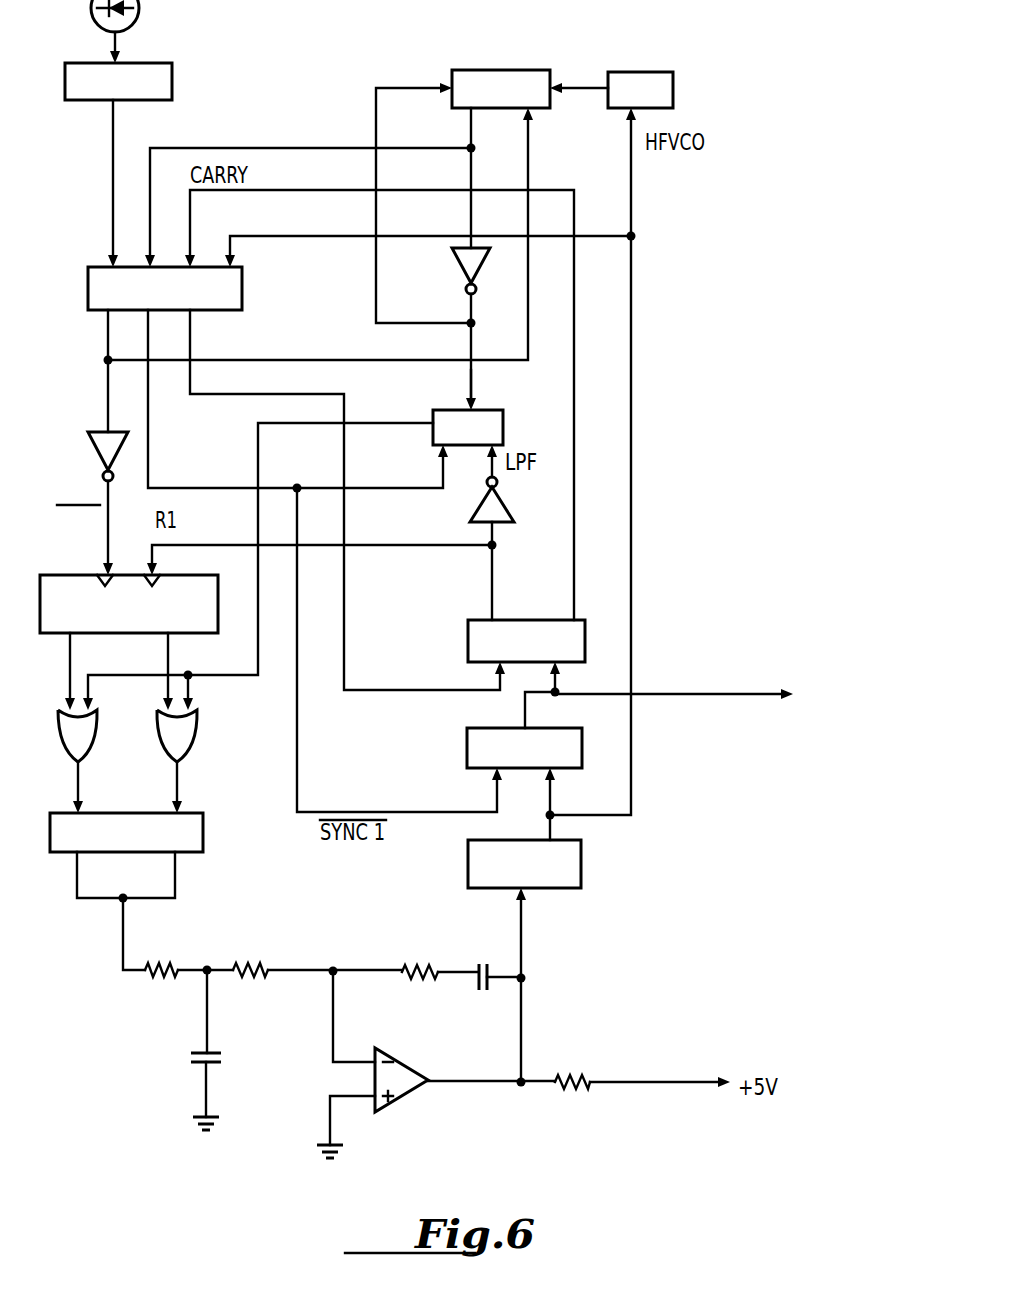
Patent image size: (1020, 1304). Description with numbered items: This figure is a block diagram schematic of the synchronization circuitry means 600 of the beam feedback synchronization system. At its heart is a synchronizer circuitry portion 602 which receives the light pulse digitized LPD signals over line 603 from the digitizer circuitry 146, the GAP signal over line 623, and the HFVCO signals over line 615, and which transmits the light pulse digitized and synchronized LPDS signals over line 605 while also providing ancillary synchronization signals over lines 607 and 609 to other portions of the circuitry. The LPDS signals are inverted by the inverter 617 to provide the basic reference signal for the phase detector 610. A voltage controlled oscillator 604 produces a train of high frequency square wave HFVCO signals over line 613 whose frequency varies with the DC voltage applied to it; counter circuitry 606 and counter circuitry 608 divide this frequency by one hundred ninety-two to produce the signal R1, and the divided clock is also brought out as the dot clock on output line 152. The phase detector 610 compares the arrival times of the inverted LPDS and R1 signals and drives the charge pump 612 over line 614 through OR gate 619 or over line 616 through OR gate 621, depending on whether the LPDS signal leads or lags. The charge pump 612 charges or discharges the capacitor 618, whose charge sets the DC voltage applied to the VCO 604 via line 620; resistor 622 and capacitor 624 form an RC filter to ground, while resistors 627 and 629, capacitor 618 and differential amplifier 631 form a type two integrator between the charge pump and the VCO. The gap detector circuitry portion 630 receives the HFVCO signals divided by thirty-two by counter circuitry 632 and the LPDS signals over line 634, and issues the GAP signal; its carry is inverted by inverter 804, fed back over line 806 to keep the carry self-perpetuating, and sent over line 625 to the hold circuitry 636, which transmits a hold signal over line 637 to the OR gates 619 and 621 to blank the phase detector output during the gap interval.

The digitizer circuitry 146 is at (173, 72).
The line 603 is at (111, 138).
The line 623 is at (356, 147).
The gap detector circuitry portion 630 is at (512, 62).
The counter circuitry 632 is at (673, 74).
The line 806 is at (377, 306).
The inverter 804 is at (482, 262).
The line 615 is at (326, 238).
The synchronizer circuitry portion 602 is at (78, 287).
The line 605 is at (100, 340).
The line 609 is at (192, 335).
The line 634 is at (276, 358).
The line 625 is at (466, 378).
The hold circuitry 636 is at (517, 414).
The line 637 is at (380, 425).
The line 607 is at (150, 438).
The inverter 617 is at (97, 446).
The phase detector 610 is at (53, 580).
The line 614 is at (68, 658).
The line 616 is at (166, 655).
The OR gate 619 is at (68, 730).
The OR gate 621 is at (185, 735).
The charge pump 612 is at (200, 832).
The resistor 622 is at (166, 968).
The resistor 627 is at (257, 968).
The resistor 629 is at (426, 965).
The capacitor 618 is at (478, 965).
The capacitor 624 is at (196, 1050).
The differential amplifier 631 is at (400, 1076).
The line 620 is at (524, 948).
The voltage controlled oscillator 604 is at (568, 877).
The line 613 is at (553, 828).
The counter circuitry 606 is at (475, 745).
The counter circuitry 608 is at (478, 636).
The dot clock output line 152 is at (682, 694).
The synchronization circuitry means 600 is at (692, 482).